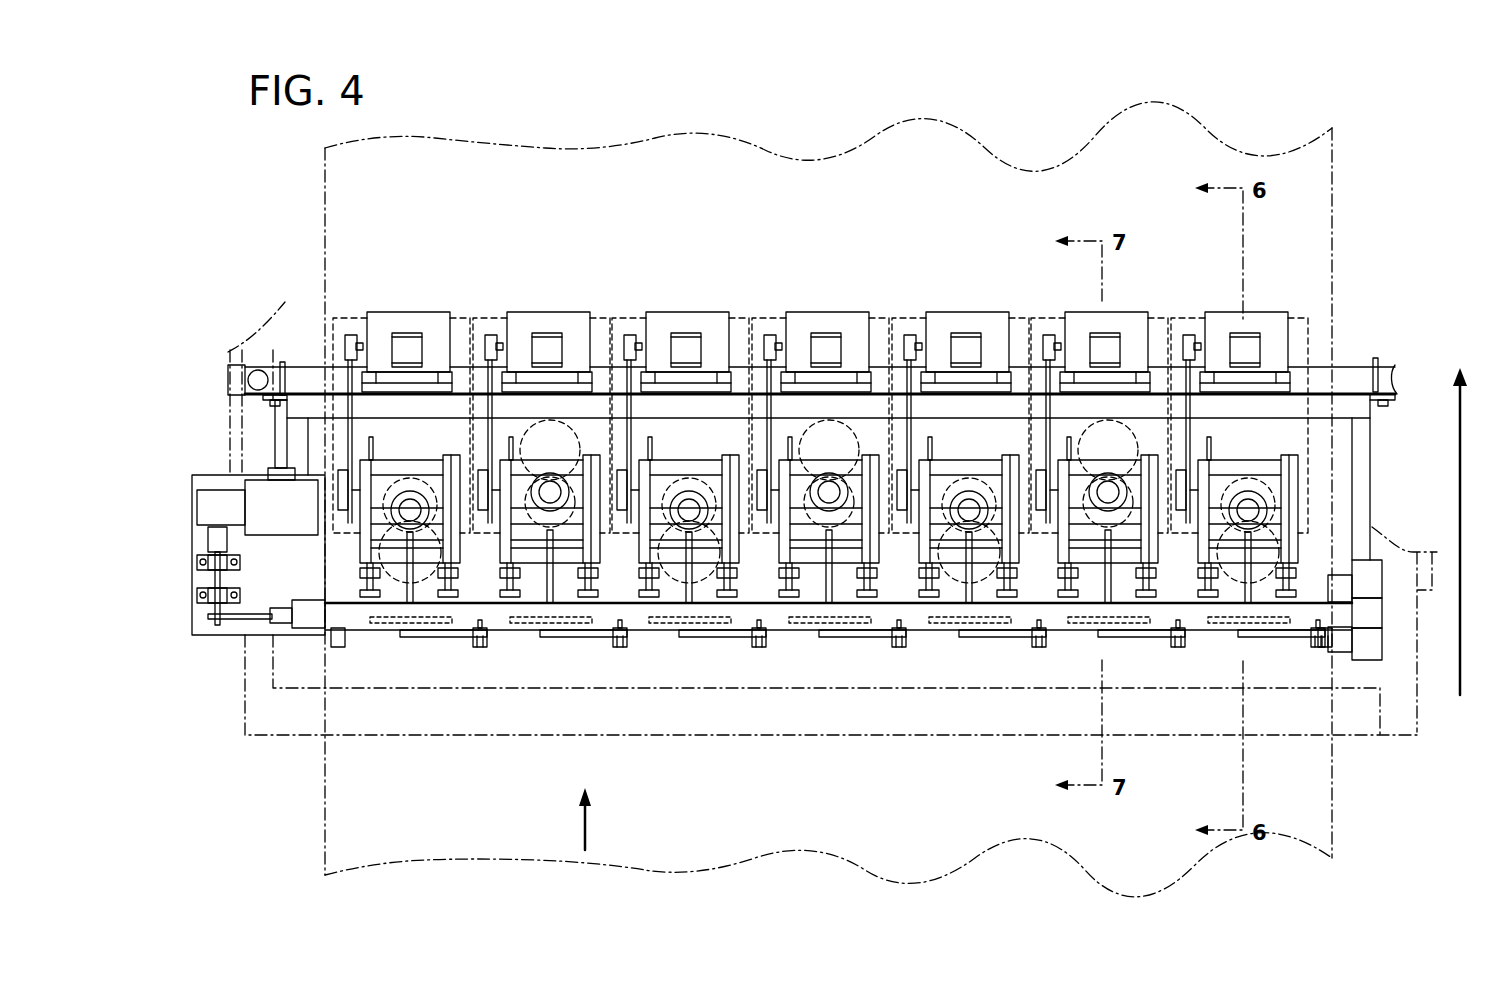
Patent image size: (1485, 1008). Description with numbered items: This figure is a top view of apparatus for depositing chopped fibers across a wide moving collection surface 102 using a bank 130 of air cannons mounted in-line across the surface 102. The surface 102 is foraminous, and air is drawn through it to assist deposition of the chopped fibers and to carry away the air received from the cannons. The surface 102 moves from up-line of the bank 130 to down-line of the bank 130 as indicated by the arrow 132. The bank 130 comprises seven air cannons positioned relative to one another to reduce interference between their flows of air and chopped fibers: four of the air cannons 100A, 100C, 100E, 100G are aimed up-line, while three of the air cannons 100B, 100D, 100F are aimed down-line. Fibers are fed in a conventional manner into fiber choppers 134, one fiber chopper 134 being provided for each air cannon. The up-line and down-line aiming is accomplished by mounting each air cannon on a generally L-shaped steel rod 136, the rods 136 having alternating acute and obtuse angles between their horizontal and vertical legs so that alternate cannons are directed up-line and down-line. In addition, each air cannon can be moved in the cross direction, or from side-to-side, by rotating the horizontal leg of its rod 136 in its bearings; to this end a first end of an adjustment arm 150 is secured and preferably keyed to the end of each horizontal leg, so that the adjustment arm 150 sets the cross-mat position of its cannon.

The moving collection surface 102 is at (822, 193).
The bank of air cannons 130 is at (238, 650).
The arrow 132 is at (585, 840).
The fiber chopper 134 is at (548, 440).
The L-shaped rod 136 is at (538, 590).
The adjustment arm 150 is at (573, 630).
The air cannon 100A is at (398, 570).
The air cannon 100B is at (560, 432).
The air cannon 100C is at (698, 580).
The air cannon 100D is at (835, 432).
The air cannon 100E is at (985, 580).
The air cannon 100F is at (1108, 432).
The air cannon 100G is at (1262, 640).